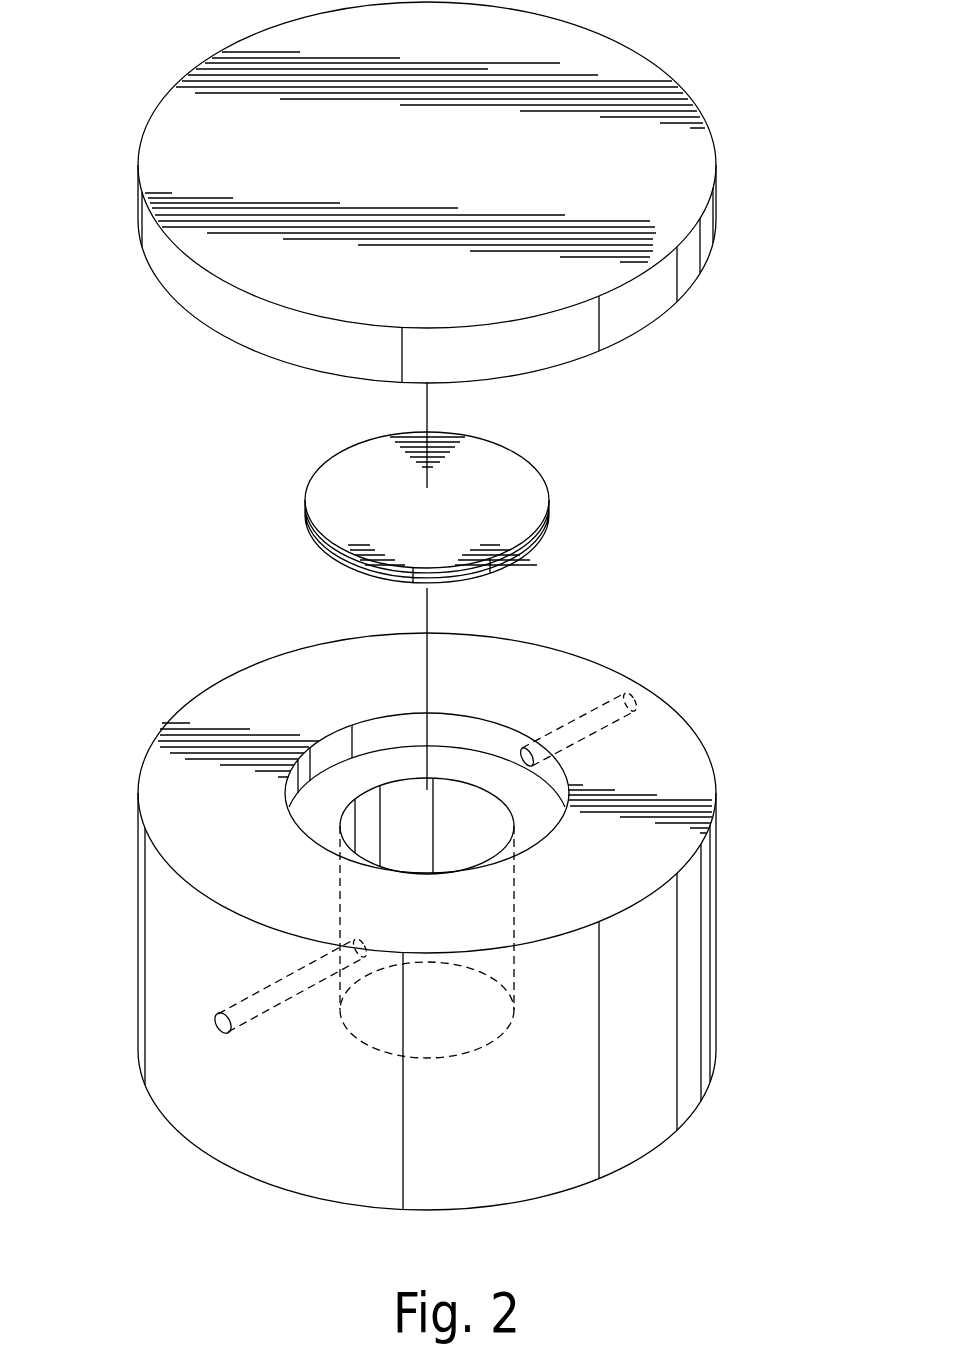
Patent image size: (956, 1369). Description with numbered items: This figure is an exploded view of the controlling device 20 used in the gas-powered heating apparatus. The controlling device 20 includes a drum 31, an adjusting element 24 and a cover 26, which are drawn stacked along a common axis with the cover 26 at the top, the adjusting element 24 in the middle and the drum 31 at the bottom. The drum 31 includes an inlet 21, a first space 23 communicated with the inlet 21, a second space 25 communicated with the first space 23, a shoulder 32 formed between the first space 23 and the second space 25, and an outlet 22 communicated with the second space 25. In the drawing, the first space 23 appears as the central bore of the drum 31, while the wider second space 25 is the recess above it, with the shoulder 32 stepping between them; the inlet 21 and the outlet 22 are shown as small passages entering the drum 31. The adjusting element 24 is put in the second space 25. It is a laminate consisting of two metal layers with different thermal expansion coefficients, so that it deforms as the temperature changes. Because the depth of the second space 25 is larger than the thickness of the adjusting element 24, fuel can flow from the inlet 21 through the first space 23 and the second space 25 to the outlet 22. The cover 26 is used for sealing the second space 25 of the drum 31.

The controlling device 20 is at (697, 1120).
The inlet 21 is at (222, 1012).
The outlet 22 is at (640, 703).
The first space 23 is at (482, 820).
The adjusting element 24 is at (517, 502).
The second space 25 is at (513, 786).
The cover 26 is at (665, 92).
The drum 31 is at (670, 966).
The shoulder 32 is at (362, 738).